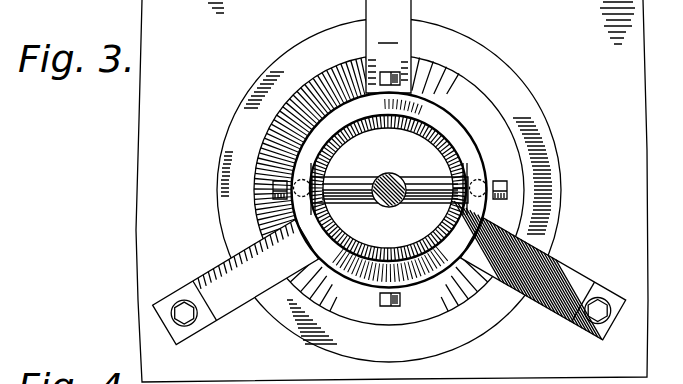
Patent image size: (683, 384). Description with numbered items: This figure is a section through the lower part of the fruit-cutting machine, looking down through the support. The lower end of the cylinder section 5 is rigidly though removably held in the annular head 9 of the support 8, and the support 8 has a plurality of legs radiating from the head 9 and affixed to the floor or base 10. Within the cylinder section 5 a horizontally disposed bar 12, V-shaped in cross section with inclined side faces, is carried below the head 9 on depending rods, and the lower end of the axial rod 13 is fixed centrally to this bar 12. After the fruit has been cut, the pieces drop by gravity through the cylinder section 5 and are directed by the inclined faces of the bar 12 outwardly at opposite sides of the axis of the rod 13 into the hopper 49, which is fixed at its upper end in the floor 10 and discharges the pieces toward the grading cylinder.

The cylinder section 5 is at (336, 167).
The support 8 is at (365, 2).
The annular head 9 is at (465, 140).
The floor or base 10 is at (422, 190).
The horizontally disposed bar 12 is at (427, 200).
The rod 13 is at (387, 174).
The hopper 49 is at (512, 160).